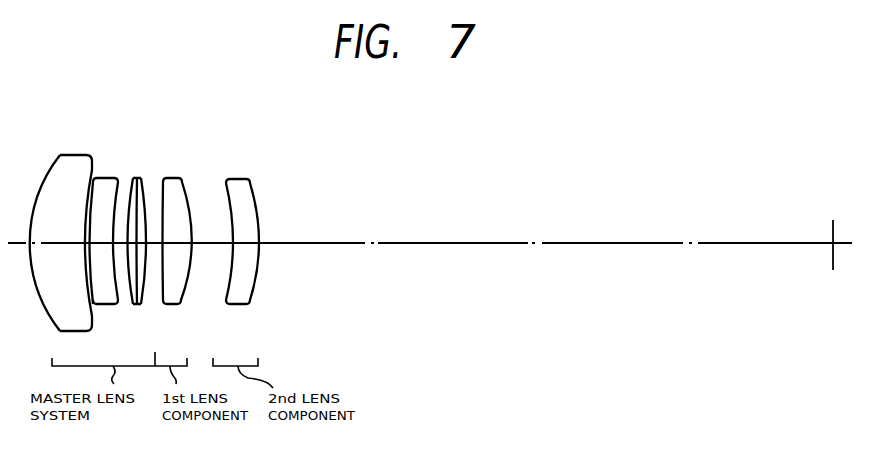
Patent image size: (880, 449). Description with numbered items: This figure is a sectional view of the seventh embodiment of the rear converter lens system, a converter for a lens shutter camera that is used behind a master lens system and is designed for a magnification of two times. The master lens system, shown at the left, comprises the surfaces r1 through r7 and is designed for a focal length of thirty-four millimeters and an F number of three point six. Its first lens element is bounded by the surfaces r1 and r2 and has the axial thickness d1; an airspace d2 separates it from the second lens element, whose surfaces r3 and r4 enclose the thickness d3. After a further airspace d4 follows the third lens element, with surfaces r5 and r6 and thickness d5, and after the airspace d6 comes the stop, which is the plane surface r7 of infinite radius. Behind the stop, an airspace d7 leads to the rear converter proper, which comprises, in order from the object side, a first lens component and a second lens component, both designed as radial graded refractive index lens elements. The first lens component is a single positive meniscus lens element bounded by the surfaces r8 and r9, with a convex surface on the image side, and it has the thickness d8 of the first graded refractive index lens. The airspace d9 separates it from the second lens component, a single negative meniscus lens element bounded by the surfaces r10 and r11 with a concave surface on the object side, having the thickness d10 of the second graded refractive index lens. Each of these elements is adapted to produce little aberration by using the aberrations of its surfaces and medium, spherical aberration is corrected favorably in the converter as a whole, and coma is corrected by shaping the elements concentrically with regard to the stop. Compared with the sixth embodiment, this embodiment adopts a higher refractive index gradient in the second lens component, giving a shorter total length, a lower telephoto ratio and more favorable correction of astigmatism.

The radius of curvature of the first lens surface r1 is at (46, 172).
The radius of curvature of the second lens surface r2 is at (84, 186).
The radius of curvature of the third lens surface r3 is at (96, 177).
The radius of curvature of the fourth lens surface r4 is at (110, 178).
The radius of curvature of the fifth lens surface r5 is at (126, 178).
The radius of curvature of the sixth lens surface r6 is at (137, 178).
The stop surface r7 is at (149, 180).
The radius of curvature of the eighth lens surface r8 is at (164, 178).
The radius of curvature of the ninth lens surface r9 is at (186, 180).
The radius of curvature of the tenth lens surface r10 is at (222, 190).
The radius of curvature of the eleventh lens surface r11 is at (261, 180).
The thickness of the first lens element d1 is at (67, 246).
The airspace between the first and second lens elements d2 is at (90, 251).
The thickness of the second lens element d3 is at (102, 305).
The airspace between the second and third lens elements d4 is at (112, 236).
The thickness of the third lens element d5 is at (132, 307).
The airspace between the third lens element and the stop d6 is at (155, 293).
The airspace between the stop and the first lens component d7 is at (165, 277).
The thickness of graded refractive index lens 1 d8 is at (185, 289).
The airspace between the first and second lens components d9 is at (200, 247).
The thickness of graded refractive index lens 2 d10 is at (251, 247).